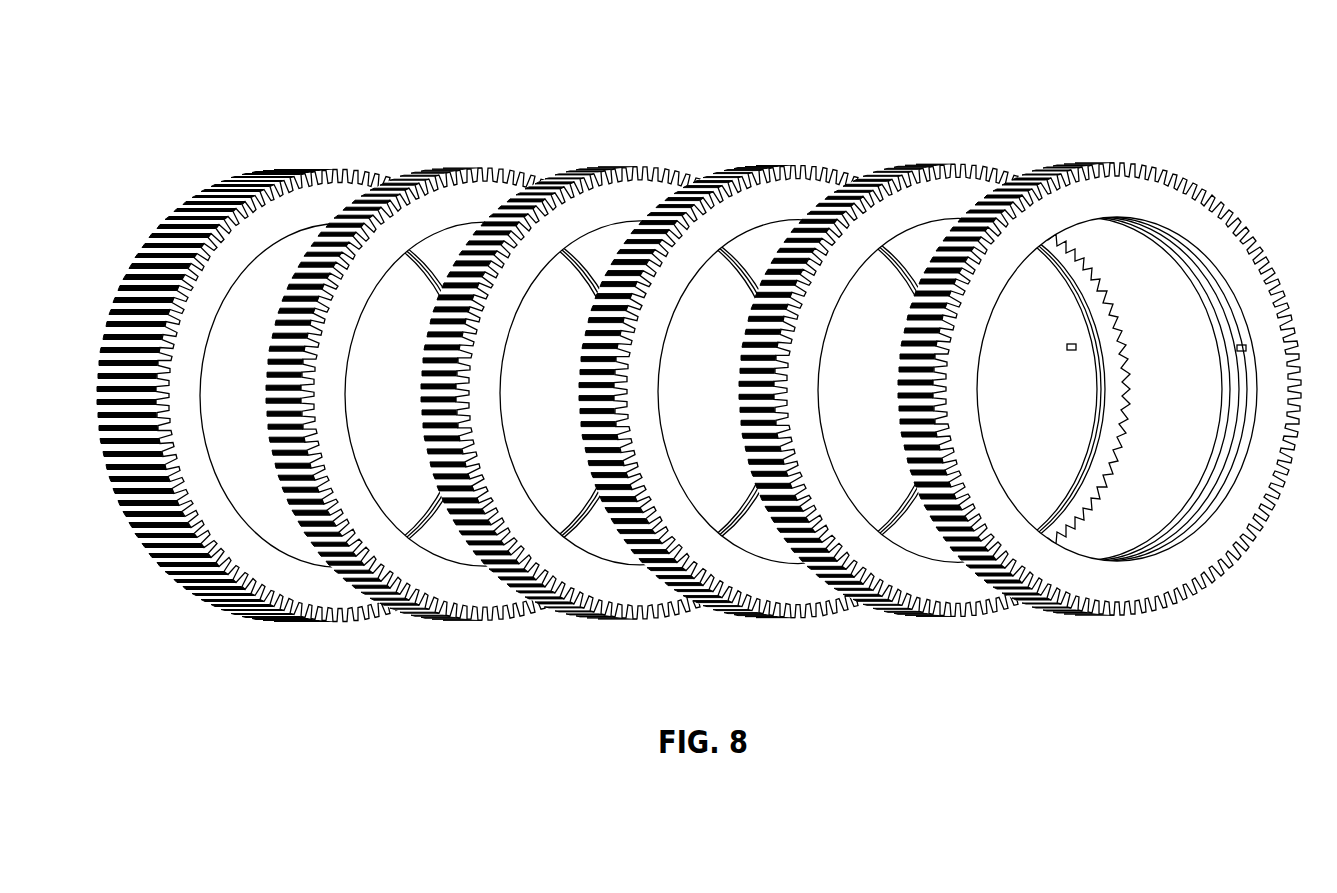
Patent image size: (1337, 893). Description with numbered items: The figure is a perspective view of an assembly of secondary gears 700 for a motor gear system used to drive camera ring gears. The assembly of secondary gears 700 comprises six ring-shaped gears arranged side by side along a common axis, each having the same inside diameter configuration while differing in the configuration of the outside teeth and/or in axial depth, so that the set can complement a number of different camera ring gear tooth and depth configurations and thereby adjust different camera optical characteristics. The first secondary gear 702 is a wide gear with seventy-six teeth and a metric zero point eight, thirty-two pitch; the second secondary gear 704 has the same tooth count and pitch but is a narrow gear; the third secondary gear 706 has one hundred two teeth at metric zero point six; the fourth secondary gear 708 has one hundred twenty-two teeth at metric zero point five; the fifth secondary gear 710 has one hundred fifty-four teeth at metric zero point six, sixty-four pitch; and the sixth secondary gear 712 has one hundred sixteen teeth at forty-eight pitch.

The assembly of secondary gears 700 is at (717, 330).
The first secondary gear 702 is at (334, 168).
The second secondary gear 704 is at (456, 167).
The third secondary gear 706 is at (614, 166).
The fourth secondary gear 708 is at (763, 165).
The fifth secondary gear 710 is at (951, 164).
The sixth secondary gear 712 is at (1098, 163).